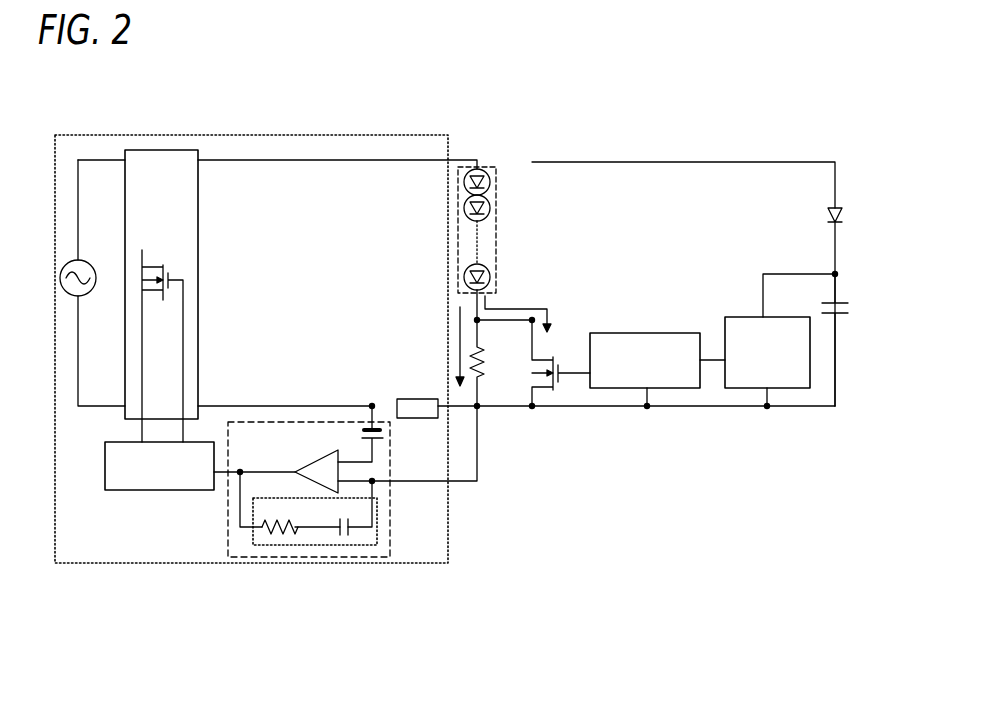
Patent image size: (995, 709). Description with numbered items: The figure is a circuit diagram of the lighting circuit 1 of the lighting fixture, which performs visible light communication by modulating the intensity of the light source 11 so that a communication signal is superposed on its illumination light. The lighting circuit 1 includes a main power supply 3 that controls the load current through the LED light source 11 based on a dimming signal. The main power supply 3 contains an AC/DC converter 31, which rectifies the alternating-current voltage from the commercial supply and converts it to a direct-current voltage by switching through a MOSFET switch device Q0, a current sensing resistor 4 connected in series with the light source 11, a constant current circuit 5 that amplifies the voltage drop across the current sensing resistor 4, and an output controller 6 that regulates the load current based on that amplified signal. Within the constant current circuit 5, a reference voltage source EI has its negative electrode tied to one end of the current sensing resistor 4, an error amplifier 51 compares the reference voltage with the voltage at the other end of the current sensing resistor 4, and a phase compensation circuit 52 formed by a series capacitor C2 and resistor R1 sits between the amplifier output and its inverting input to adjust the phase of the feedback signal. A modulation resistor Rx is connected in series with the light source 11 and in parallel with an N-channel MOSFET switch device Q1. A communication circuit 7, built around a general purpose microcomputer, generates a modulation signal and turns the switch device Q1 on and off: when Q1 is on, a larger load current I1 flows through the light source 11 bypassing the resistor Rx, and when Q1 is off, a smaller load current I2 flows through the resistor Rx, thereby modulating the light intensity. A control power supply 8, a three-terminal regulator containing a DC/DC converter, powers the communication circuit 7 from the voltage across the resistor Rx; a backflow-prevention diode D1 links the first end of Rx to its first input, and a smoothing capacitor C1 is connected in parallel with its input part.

The lighting circuit 1 is at (64, 122).
The main power supply 3 is at (384, 134).
The current sensing resistor 4 is at (421, 399).
The constant current circuit 5 is at (317, 565).
The output controller 6 is at (170, 491).
The communication circuit 7 is at (640, 333).
The control power supply 8 is at (743, 317).
The light source 11 is at (488, 167).
The AC/DC converter 31 is at (199, 198).
The error amplifier 51 is at (324, 462).
The phase compensation circuit 52 is at (363, 546).
The switch device Q0 is at (162, 344).
The switch device Q1 is at (561, 363).
The resistor Rx is at (488, 363).
The resistor R1 is at (280, 516).
The smoothing capacitor C1 is at (848, 340).
The capacitor C2 is at (348, 517).
The diode D1 is at (847, 214).
The reference voltage source EI is at (360, 434).
The load current I1 is at (518, 312).
The load current I2 is at (450, 346).